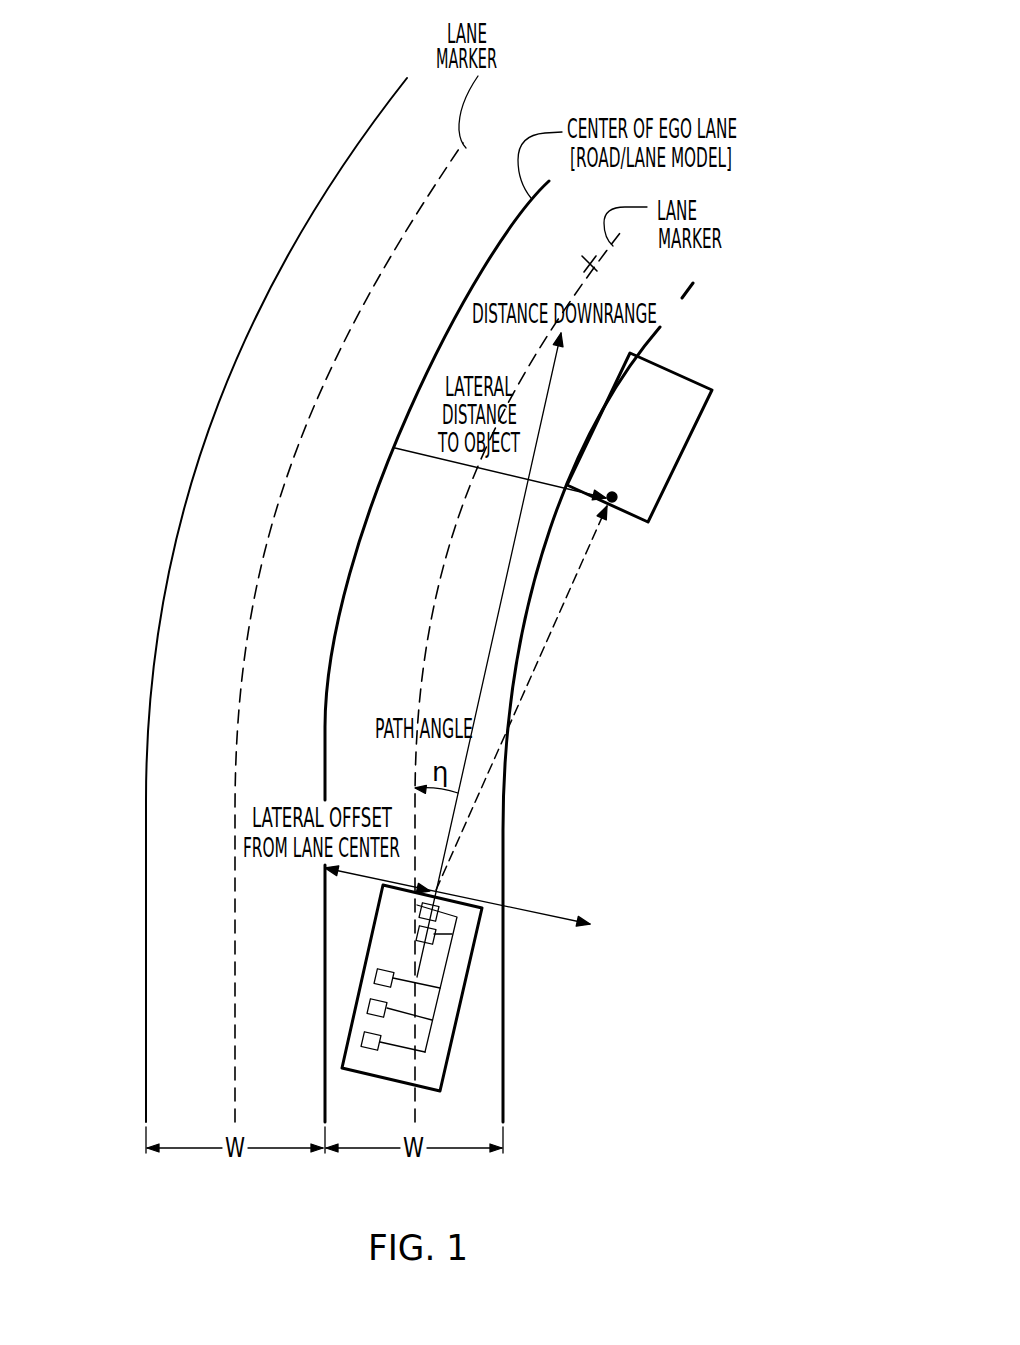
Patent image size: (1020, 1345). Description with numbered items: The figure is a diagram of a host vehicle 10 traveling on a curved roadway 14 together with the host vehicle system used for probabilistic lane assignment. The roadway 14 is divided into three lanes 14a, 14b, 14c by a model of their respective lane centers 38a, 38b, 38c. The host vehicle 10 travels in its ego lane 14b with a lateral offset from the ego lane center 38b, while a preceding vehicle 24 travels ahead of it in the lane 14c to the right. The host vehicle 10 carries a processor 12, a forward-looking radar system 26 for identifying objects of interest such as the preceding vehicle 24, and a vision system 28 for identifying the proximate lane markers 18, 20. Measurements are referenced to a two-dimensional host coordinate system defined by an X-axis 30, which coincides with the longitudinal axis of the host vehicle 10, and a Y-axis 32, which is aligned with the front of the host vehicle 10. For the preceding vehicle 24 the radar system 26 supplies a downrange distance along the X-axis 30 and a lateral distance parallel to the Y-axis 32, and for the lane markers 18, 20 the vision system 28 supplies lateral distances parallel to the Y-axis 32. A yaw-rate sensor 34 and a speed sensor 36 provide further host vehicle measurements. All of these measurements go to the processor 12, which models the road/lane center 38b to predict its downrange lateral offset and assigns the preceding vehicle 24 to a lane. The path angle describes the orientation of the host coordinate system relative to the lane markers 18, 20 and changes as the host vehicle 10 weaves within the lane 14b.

The host vehicle 10 is at (461, 1038).
The processor 12 is at (362, 1042).
The curved roadway 14 is at (688, 600).
The lane 14a is at (235, 598).
The ego lane 14b is at (410, 623).
The lane 14c is at (483, 640).
The lane marker 18 is at (235, 910).
The lane marker 20 is at (414, 1102).
The preceding vehicle 24 is at (682, 462).
The forward-looking radar system 26 is at (420, 913).
The vision system 28 is at (418, 935).
The X-axis 30 is at (503, 590).
The Y-axis 32 is at (545, 913).
The yaw-rate sensor 34 is at (375, 978).
The speed sensor 36 is at (368, 1010).
The lane center 38a is at (147, 707).
The ego lane center 38b is at (327, 707).
The lane center 38c is at (527, 605).